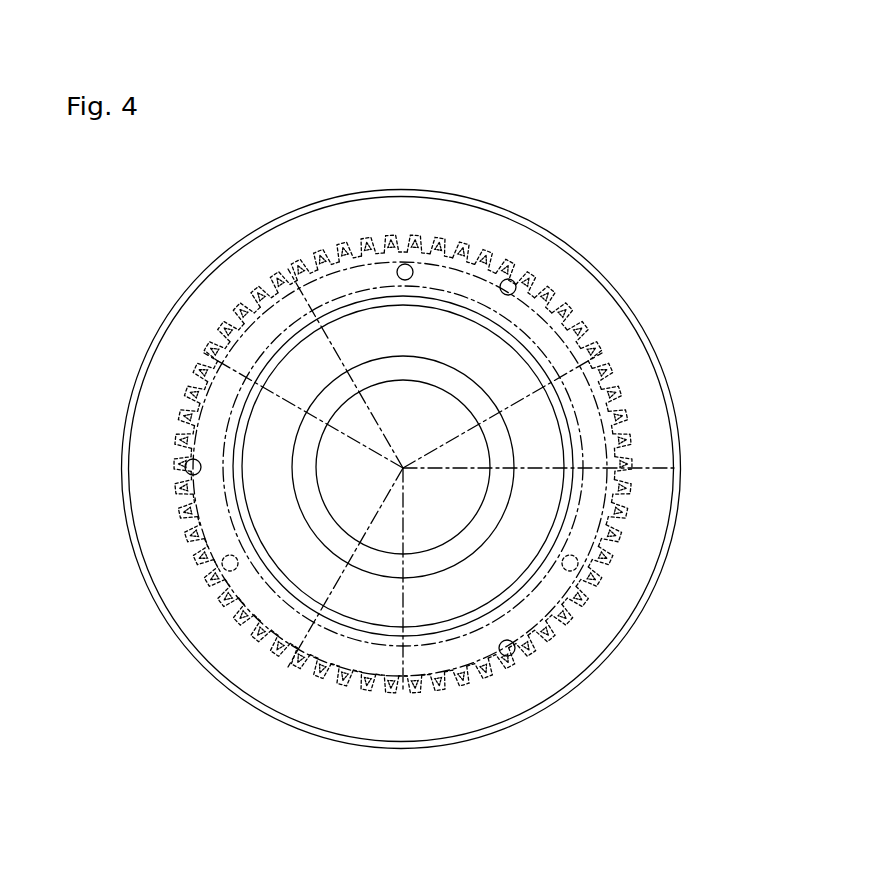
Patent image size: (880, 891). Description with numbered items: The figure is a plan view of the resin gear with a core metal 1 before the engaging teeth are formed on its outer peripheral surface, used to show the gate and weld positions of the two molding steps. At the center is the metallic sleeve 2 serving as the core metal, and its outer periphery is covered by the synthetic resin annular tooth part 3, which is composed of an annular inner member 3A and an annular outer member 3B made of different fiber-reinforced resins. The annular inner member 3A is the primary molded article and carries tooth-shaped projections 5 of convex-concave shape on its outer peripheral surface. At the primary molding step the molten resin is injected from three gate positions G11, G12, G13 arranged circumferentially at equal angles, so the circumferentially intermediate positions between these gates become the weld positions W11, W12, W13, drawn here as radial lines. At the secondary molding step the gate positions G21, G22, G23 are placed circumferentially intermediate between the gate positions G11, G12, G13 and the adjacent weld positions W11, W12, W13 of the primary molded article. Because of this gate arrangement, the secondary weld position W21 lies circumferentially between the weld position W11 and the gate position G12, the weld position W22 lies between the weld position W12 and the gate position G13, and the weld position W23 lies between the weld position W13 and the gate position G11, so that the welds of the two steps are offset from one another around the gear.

The resin gear with a core metal 1 is at (578, 210).
The metallic sleeve 2 is at (400, 362).
The annular tooth part 3 is at (403, 398).
The annular inner member 3A is at (342, 327).
The annular outer member 3B is at (363, 222).
The tooth-shaped projections 5 is at (210, 325).
The gate position G11 is at (407, 262).
The gate position G12 is at (578, 568).
The gate position G13 is at (222, 571).
The gate position G21 is at (509, 278).
The gate position G22 is at (513, 659).
The gate position G23 is at (188, 472).
The weld position W11 is at (520, 400).
The weld position W12 is at (405, 658).
The weld position W13 is at (300, 409).
The weld position W21 is at (600, 465).
The weld position W22 is at (306, 636).
The weld position W23 is at (343, 367).